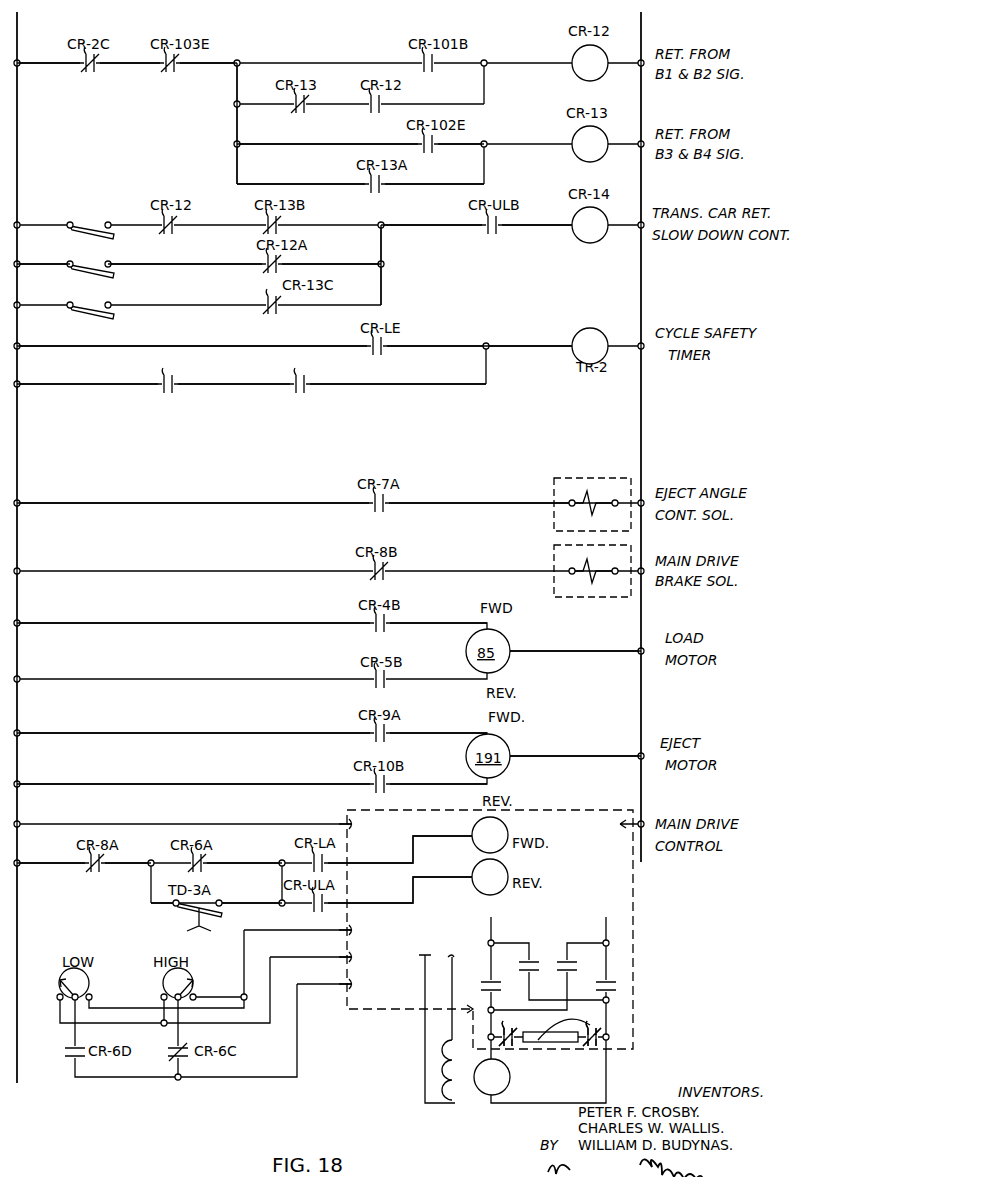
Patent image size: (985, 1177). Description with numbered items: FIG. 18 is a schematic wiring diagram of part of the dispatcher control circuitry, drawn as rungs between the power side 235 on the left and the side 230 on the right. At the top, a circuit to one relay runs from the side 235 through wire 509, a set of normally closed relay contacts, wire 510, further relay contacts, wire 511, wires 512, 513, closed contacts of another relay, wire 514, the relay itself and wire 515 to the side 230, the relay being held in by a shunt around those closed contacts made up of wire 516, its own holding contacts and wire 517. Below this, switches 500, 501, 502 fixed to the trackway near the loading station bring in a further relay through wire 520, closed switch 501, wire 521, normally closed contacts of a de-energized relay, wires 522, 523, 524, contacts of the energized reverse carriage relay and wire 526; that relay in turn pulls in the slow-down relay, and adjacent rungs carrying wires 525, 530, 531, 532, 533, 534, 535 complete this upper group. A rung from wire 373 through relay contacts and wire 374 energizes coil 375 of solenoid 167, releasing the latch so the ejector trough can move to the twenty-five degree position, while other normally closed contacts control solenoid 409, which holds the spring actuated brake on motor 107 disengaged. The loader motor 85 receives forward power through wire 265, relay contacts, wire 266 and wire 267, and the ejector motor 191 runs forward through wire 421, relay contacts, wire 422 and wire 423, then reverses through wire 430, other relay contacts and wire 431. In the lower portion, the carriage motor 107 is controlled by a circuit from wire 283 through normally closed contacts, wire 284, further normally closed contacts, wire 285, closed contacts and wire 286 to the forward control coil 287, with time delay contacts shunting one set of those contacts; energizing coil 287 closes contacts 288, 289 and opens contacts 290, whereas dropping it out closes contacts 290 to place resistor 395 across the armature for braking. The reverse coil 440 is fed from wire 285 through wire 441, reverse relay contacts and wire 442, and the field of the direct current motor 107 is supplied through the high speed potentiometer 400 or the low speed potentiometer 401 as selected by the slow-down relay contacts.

The wire 509 is at (53, 63).
The wire 510 is at (136, 63).
The wire 511 is at (216, 64).
The wire 512 is at (237, 125).
The wire 513 is at (290, 142).
The wire 514 is at (470, 142).
The wire 515 is at (608, 147).
The wire 516 is at (278, 184).
The wire 517 is at (418, 184).
The side 235 is at (17, 150).
The side 230 is at (641, 438).
The switch 500 is at (97, 223).
The switch 501 is at (83, 262).
The switch 502 is at (91, 306).
The wire 520 is at (57, 264).
The wire 521 is at (196, 264).
The wire 522 is at (328, 264).
The wire 523 is at (381, 252).
The wire 524 is at (414, 225).
The conductor 525 is at (520, 225).
The wire 526 is at (617, 234).
The conductor 530 is at (148, 346).
The conductor 531 is at (462, 346).
The timer relay TR-2 532 is at (608, 348).
The conductor 533 is at (78, 384).
The conductor 534 is at (214, 384).
The conductor 535 is at (348, 384).
The wire 373 is at (63, 503).
The wire 374 is at (456, 506).
The coil 375 is at (595, 490).
The solenoid 167 is at (559, 468).
The solenoid 409 is at (580, 560).
The wire 265 is at (40, 623).
The wire 266 is at (420, 623).
The wire 267 is at (582, 651).
The loader motor 85 is at (488, 651).
The wire 421 is at (190, 733).
The wire 422 is at (433, 733).
The wire 423 is at (568, 756).
The ejector motor 191 is at (488, 756).
The wire 430 is at (190, 784).
The wire 431 is at (420, 784).
The wire 283 is at (42, 863).
The wire 284 is at (138, 866).
The wire 285 is at (242, 854).
The wire 286 is at (363, 863).
The forward control coil 287 is at (503, 833).
The reverse coil 440 is at (504, 868).
The wire 441 is at (282, 894).
The wire 442 is at (368, 903).
The low speed potentiometer 401 is at (60, 970).
The high speed potentiometer 400 is at (191, 974).
The contacts 288 is at (485, 982).
The contacts 289 is at (612, 980).
The contacts 290 is at (512, 1044).
The resistor 395 is at (590, 1042).
The motor 107 is at (505, 1078).